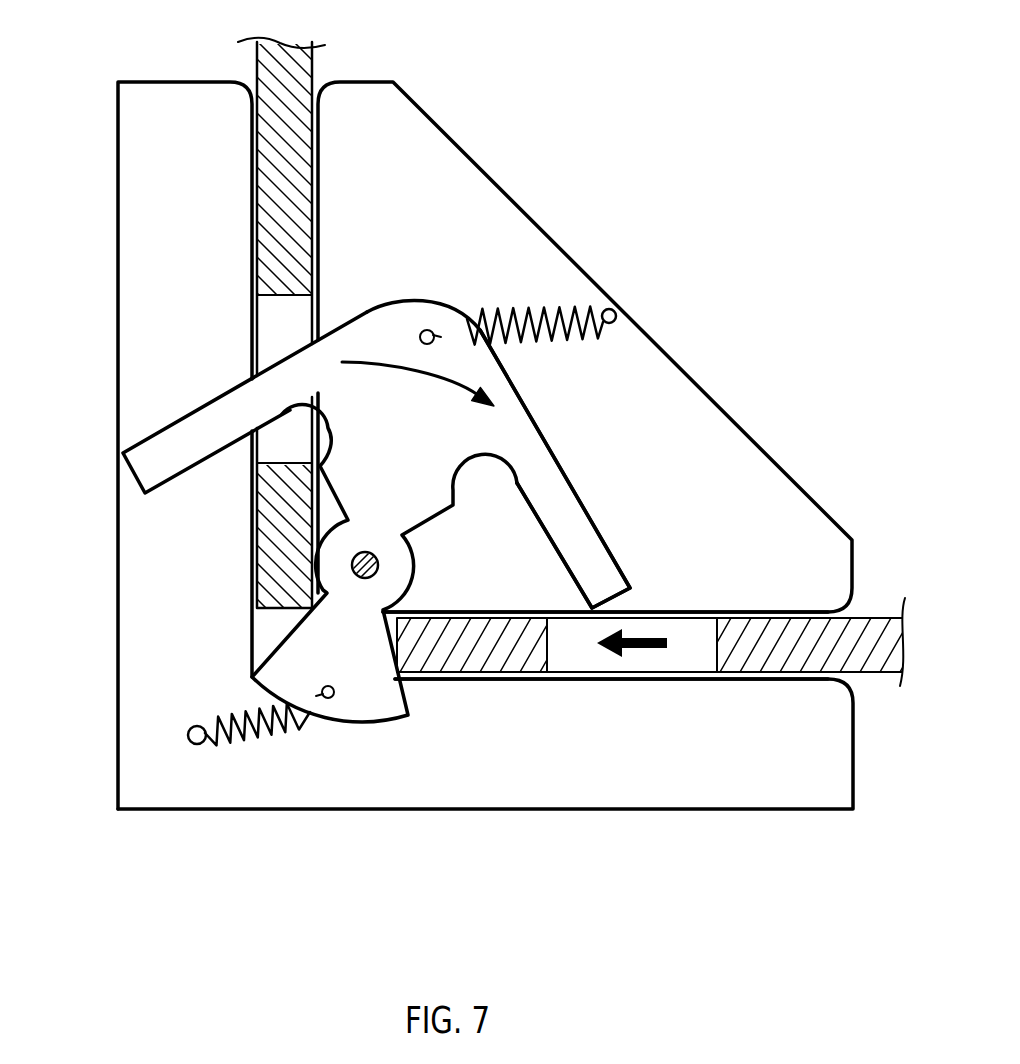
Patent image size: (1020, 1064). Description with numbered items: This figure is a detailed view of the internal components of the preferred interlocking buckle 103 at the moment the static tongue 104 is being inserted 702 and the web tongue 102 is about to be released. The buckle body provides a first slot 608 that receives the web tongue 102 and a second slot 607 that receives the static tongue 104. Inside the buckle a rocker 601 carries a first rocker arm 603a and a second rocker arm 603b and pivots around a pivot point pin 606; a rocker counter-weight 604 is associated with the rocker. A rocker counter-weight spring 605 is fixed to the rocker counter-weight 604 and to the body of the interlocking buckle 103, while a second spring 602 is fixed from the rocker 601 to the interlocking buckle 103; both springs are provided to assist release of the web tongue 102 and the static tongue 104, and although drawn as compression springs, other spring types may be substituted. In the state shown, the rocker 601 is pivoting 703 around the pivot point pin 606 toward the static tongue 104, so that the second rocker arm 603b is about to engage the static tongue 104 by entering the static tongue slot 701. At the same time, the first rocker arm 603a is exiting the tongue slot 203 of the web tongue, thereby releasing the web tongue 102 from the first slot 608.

The web tongue 102 is at (312, 77).
The interlocking buckle 103 is at (453, 183).
The static tongue 104 is at (870, 673).
The tongue slot 203 is at (268, 335).
The rocker 601 is at (441, 454).
The second spring 602 is at (543, 313).
The first rocker arm 603a is at (178, 437).
The second rocker arm 603b is at (592, 547).
The rocker counter-weight 604 is at (357, 713).
The rocker counter-weight spring 605 is at (235, 737).
The pivot point pin 606 is at (352, 562).
The second slot 607 is at (583, 682).
The first slot 608 is at (253, 233).
The static tongue slot 701 is at (695, 665).
The insertion of the static tongue 702 is at (653, 650).
The pivoting of the rocker 703 is at (395, 363).